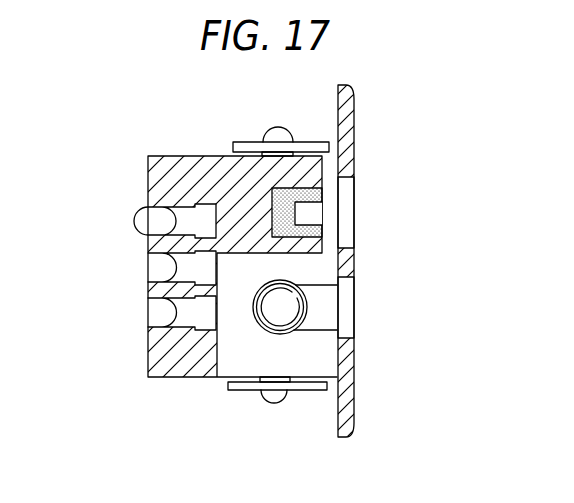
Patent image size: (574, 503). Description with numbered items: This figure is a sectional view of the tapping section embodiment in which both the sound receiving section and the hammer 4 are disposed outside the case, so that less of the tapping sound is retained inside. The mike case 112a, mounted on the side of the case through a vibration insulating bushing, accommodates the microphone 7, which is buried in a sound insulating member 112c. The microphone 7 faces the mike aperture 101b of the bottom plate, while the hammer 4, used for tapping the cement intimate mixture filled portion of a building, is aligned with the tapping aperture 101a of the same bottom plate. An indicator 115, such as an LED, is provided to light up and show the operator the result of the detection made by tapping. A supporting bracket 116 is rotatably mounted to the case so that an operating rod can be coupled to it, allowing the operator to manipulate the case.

The mike case 112a is at (198, 172).
The sound insulating member 112c is at (320, 197).
The microphone 7 is at (313, 214).
The mike aperture 101b is at (345, 243).
The tapping aperture 101a is at (346, 331).
The indicator 115 is at (155, 272).
The hammer 4 is at (297, 308).
The supporting bracket 116 is at (237, 390).